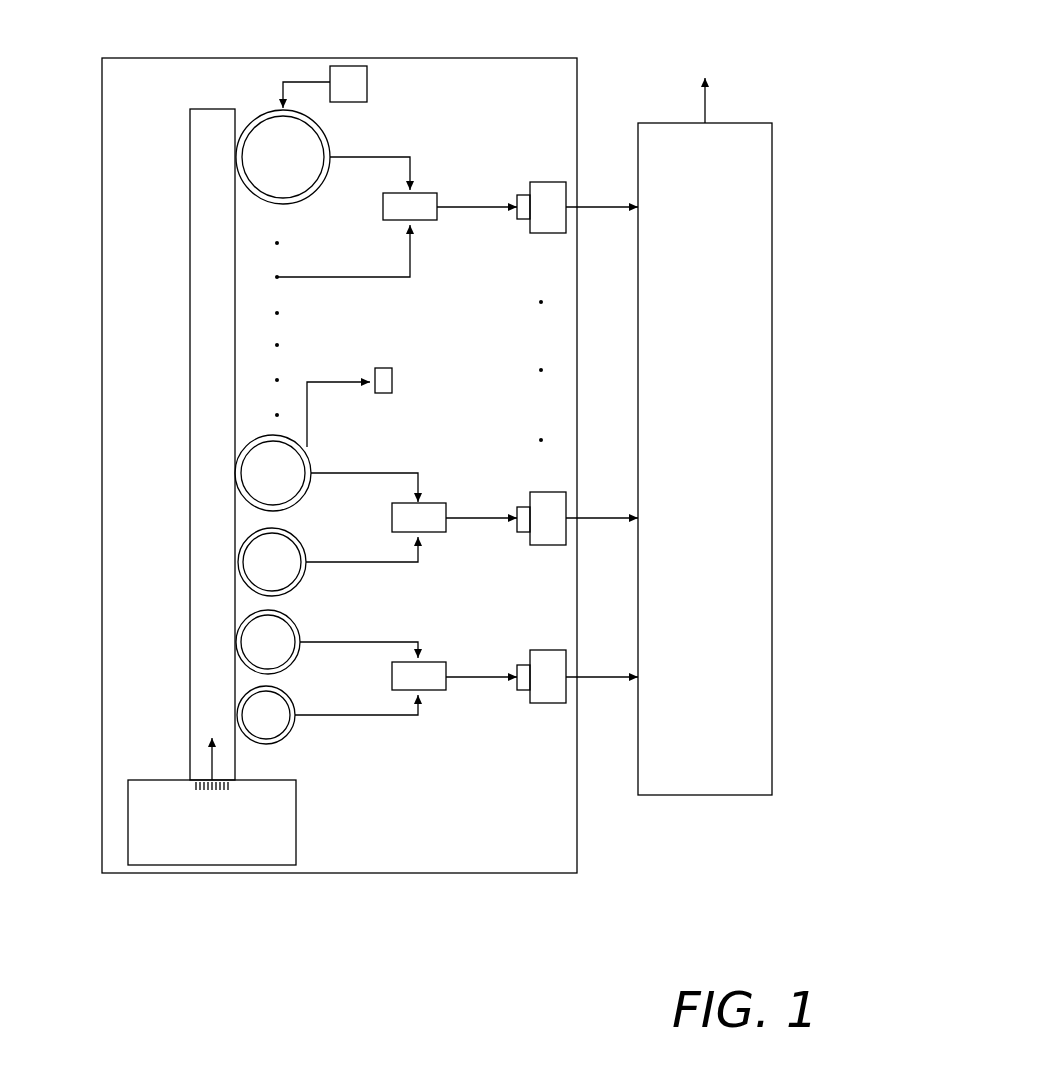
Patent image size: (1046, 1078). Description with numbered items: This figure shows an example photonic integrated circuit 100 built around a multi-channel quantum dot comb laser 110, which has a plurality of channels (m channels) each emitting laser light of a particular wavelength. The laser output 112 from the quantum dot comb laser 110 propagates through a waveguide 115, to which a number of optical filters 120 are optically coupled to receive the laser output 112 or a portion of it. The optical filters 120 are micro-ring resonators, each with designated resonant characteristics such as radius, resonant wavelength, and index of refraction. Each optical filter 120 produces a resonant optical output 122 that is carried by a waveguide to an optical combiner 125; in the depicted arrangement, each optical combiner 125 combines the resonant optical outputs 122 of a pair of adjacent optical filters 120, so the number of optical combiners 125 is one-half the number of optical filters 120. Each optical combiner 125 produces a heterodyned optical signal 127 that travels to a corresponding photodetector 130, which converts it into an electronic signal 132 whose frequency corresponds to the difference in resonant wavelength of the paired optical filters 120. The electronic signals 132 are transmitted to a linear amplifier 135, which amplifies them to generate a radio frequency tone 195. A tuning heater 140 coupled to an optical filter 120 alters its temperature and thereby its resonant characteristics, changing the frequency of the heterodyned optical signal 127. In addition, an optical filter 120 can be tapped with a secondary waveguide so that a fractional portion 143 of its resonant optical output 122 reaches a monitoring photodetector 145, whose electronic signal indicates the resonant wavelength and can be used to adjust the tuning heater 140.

The photonic integrated circuit 100 is at (339, 465).
The quantum dot comb laser 110 is at (212, 822).
The laser output 112 is at (212, 746).
The waveguide 115 is at (207, 497).
The optical filters 120 is at (262, 153).
The resonant optical output 122 is at (347, 437).
The optical combiner 125 is at (414, 441).
The heterodyned optical signal 127 is at (477, 428).
The photodetector 130 is at (543, 218).
The electronic signal 132 is at (602, 427).
The linear amplifier 135 is at (705, 459).
The tuning heater 140 is at (353, 83).
The fractional portion 143 is at (338, 403).
The monitoring photodetector 145 is at (392, 368).
The radio frequency tone 195 is at (705, 86).